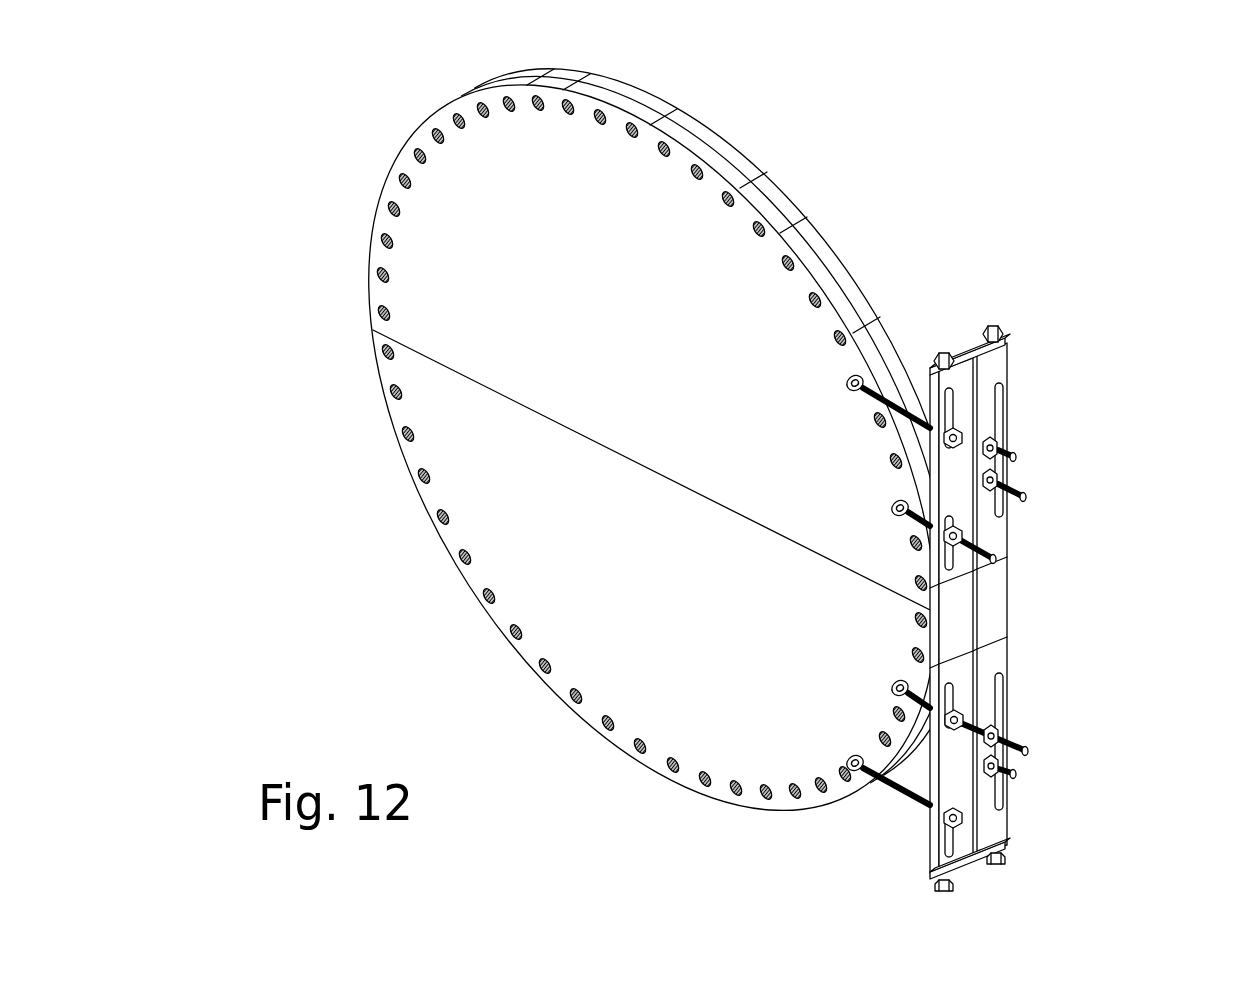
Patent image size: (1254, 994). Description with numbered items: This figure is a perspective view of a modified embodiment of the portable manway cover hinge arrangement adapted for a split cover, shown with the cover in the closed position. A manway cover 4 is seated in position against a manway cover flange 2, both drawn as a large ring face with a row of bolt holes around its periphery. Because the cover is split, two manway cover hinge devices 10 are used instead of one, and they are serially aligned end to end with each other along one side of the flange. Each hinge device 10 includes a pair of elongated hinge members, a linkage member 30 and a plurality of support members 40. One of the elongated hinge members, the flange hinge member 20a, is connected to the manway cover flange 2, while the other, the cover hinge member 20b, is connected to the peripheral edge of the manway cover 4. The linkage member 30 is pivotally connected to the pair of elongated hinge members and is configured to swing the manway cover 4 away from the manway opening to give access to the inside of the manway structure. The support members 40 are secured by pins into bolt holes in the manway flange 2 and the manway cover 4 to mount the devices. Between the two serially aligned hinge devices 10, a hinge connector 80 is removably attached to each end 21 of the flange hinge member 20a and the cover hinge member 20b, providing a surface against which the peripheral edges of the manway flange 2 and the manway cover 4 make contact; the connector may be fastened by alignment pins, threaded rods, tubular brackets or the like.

The manway cover flange 2 is at (743, 150).
The manway cover 4 is at (490, 475).
The manway cover hinge device 10 is at (1015, 571).
The flange hinge member 20a is at (1007, 390).
The cover hinge member 20b is at (937, 457).
The end 21 is at (1007, 556).
The linkage member 30 is at (968, 352).
The support member 40 is at (900, 395).
The hinge connector 80 is at (955, 618).